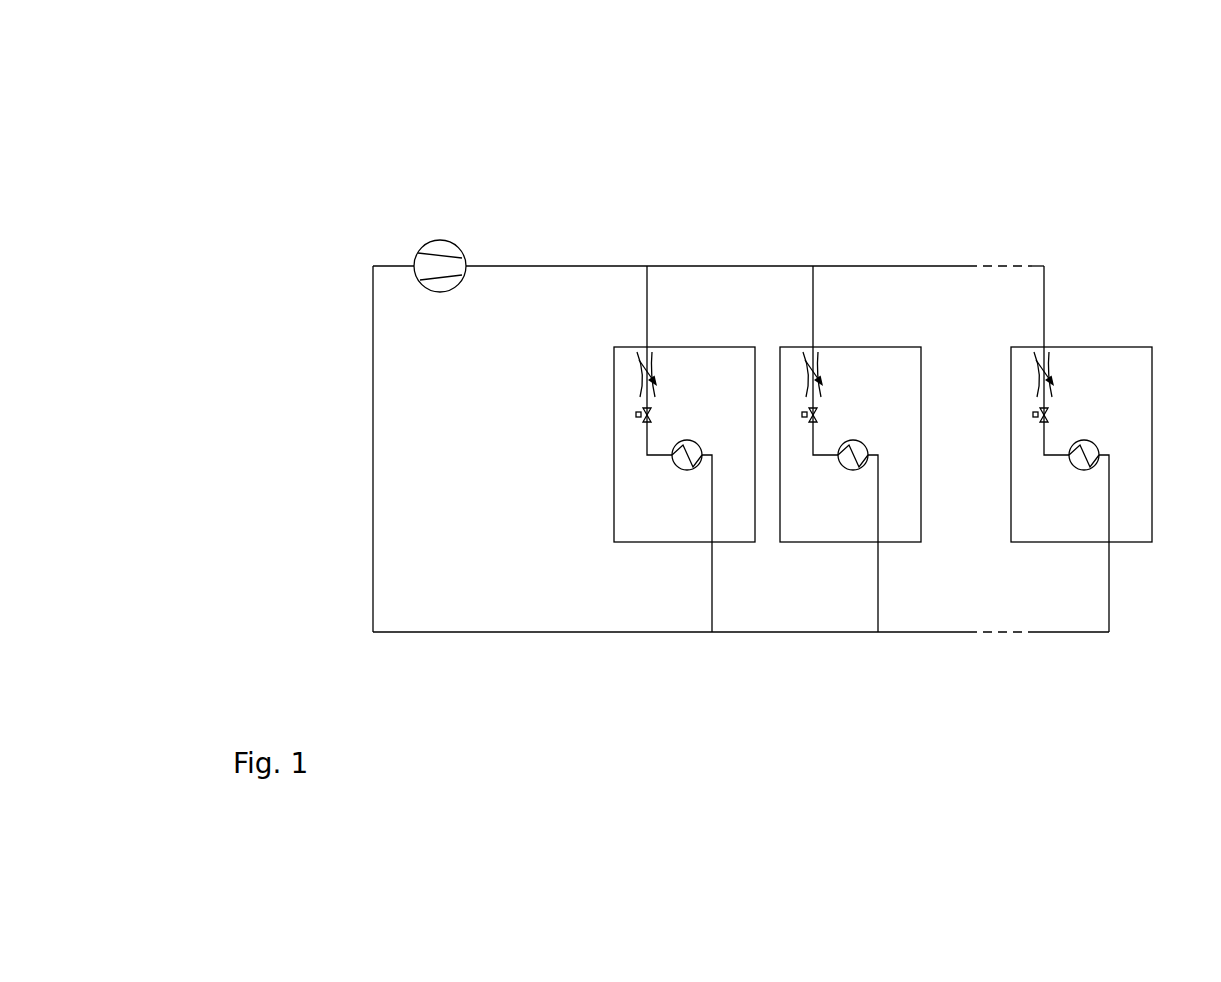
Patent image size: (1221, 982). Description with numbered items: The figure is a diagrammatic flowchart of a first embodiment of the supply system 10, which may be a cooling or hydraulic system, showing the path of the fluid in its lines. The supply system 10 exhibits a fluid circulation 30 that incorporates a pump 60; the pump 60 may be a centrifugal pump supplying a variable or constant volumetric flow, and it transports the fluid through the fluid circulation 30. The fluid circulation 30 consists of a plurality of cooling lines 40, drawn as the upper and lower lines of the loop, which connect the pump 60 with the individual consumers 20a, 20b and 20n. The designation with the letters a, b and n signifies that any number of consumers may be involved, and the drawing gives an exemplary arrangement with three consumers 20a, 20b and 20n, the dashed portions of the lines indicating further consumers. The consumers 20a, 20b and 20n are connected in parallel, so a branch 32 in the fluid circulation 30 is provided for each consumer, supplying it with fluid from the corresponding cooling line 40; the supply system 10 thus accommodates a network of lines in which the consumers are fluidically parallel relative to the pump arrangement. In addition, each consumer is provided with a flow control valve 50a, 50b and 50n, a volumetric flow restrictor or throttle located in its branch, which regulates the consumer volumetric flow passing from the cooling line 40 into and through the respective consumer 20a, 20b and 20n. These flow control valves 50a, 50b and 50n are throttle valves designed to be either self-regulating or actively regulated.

The supply system 10 is at (398, 166).
The consumer 20a is at (648, 520).
The consumer 20b is at (837, 517).
The consumer 20n is at (1138, 535).
The fluid circulation 30 is at (911, 236).
The branch 32 is at (647, 266).
The cooling line 40 is at (582, 266).
The flow control valve 50a is at (666, 374).
The flow control valve 50b is at (832, 372).
The flow control valve 50n is at (1058, 362).
The pump 60 is at (438, 241).